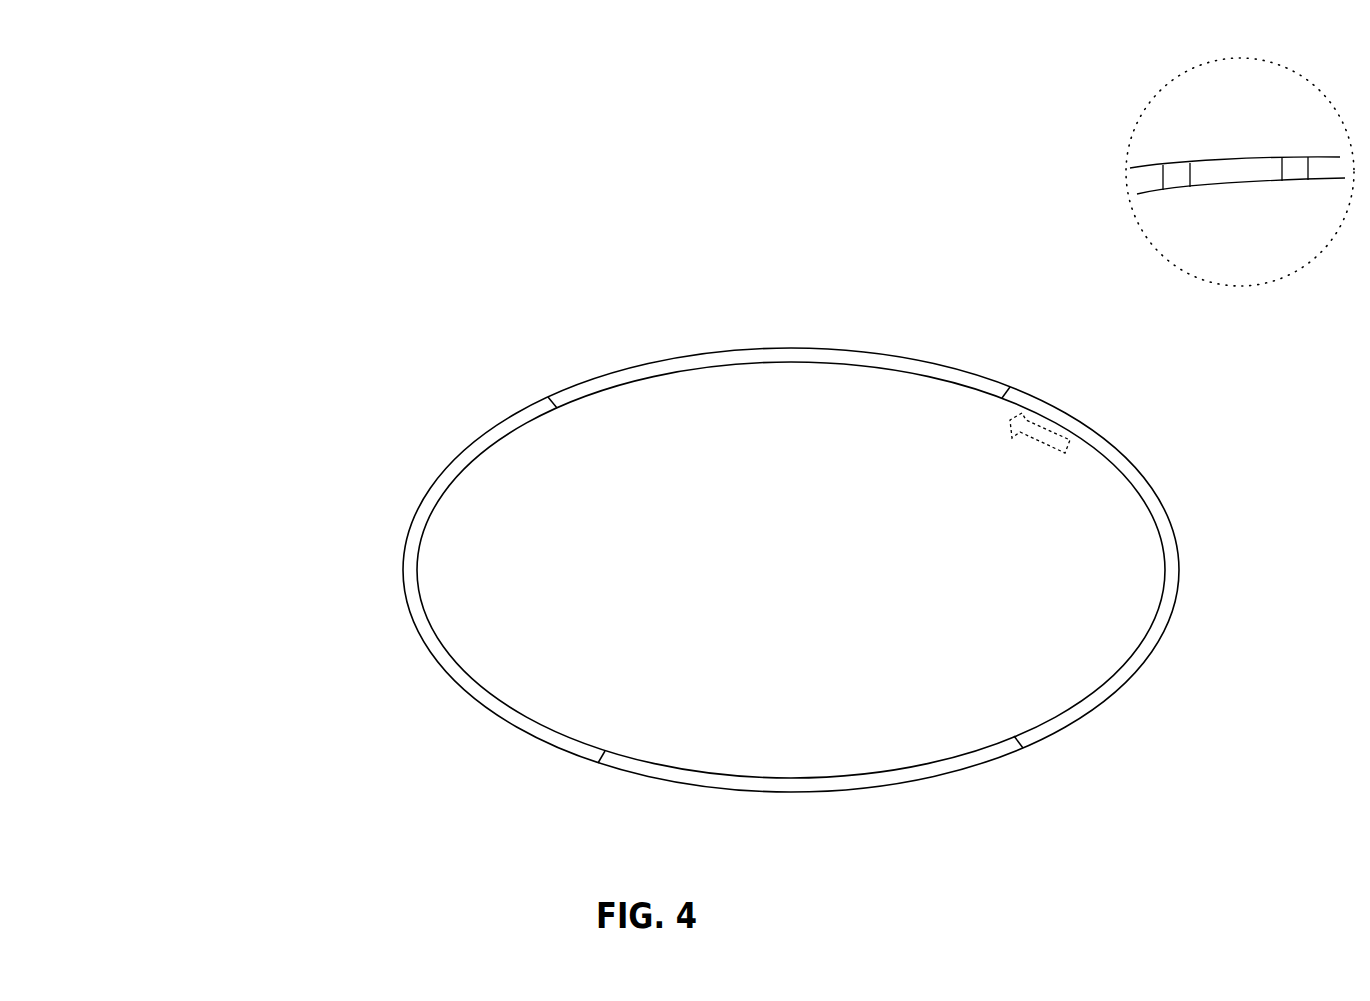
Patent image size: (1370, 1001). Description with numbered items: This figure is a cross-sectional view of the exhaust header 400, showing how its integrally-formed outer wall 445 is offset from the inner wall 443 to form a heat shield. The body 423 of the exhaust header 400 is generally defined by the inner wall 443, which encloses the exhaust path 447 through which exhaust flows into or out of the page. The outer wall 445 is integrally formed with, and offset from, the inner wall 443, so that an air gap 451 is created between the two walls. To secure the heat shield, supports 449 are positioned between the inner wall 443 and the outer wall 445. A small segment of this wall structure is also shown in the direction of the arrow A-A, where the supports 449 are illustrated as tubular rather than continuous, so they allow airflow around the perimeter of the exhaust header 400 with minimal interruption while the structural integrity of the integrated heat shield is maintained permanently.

The exhaust header 400 is at (163, 168).
The body 423 is at (440, 497).
The inner wall 443 is at (813, 363).
The outer wall 445 is at (498, 714).
The exhaust path 447 is at (708, 510).
The supports 449 is at (1199, 289).
The air gap 451 is at (832, 782).